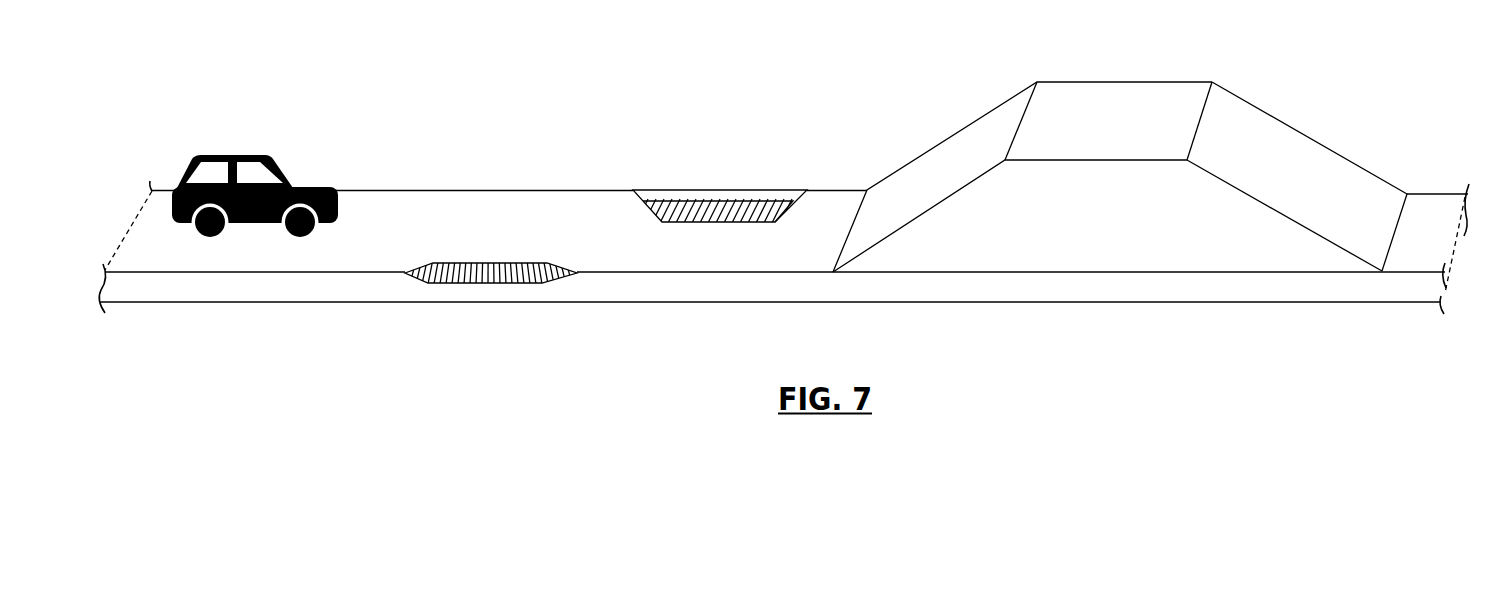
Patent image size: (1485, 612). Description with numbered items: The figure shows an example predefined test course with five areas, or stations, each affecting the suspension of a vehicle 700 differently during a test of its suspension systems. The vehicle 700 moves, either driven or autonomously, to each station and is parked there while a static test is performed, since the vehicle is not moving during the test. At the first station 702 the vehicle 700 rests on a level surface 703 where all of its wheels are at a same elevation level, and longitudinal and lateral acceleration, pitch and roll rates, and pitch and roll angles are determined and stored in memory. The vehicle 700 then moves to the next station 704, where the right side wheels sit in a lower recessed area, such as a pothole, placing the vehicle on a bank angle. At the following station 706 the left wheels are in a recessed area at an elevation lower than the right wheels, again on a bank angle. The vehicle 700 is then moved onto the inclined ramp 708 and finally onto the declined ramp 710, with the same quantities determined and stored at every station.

The vehicle 700 is at (227, 155).
The first station 702 is at (217, 273).
The level surface 703 is at (413, 212).
The station with recessed area for right side wheels 704 is at (485, 285).
The station with recessed area for left wheels 706 is at (695, 200).
The inclined ramp 708 is at (963, 128).
The declined ramp 710 is at (1288, 122).